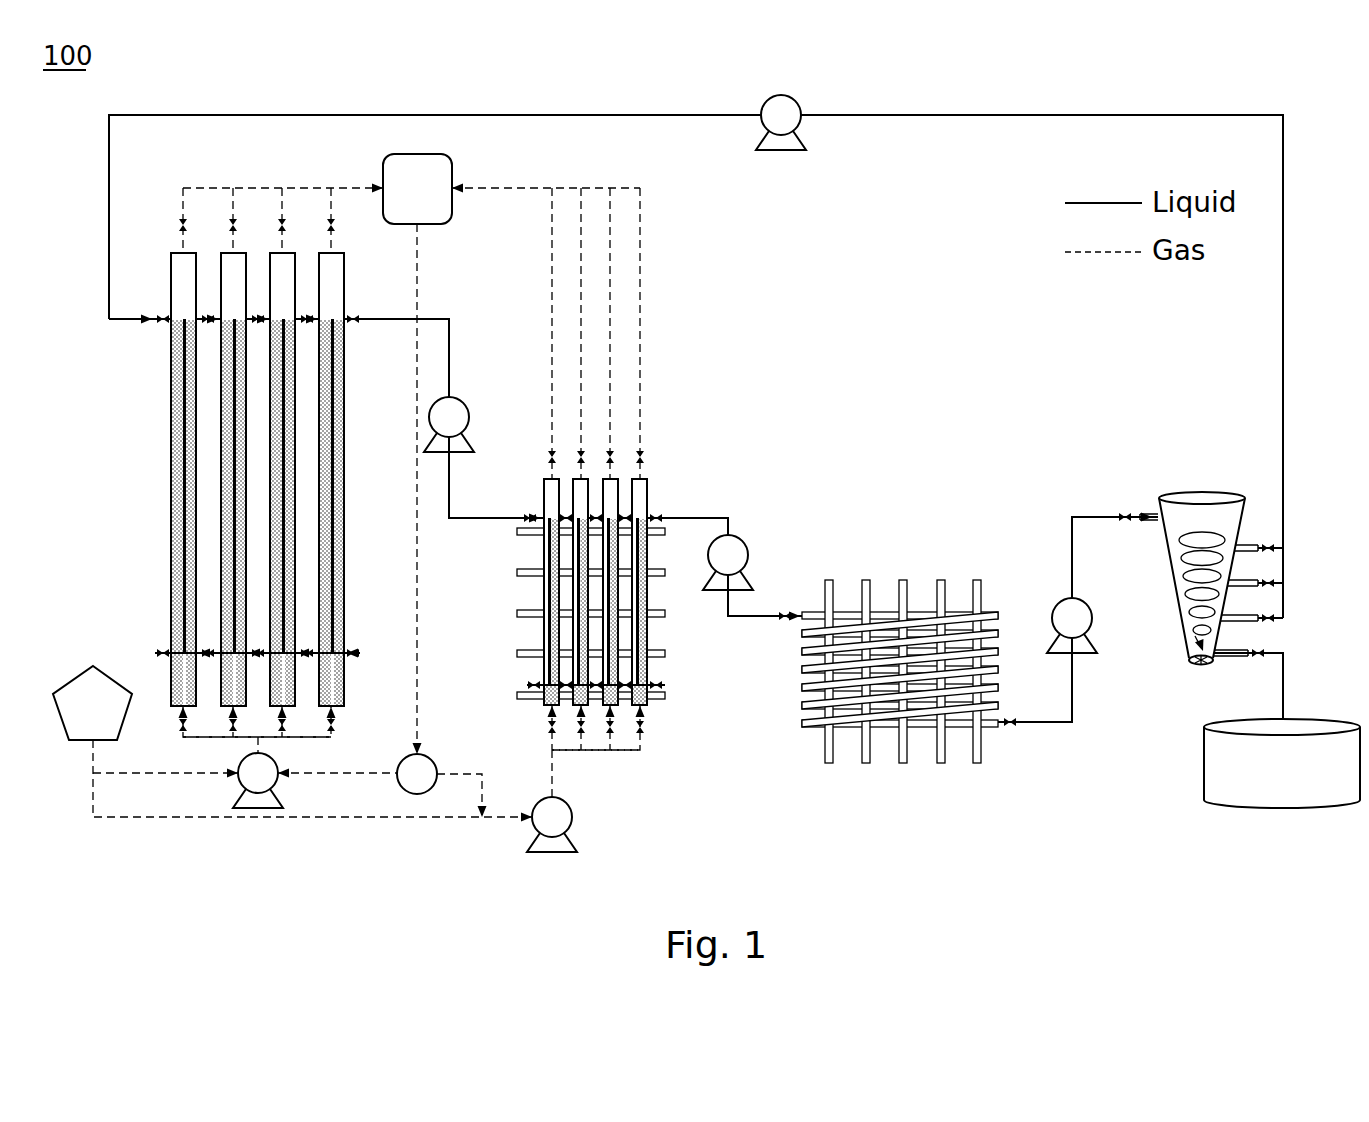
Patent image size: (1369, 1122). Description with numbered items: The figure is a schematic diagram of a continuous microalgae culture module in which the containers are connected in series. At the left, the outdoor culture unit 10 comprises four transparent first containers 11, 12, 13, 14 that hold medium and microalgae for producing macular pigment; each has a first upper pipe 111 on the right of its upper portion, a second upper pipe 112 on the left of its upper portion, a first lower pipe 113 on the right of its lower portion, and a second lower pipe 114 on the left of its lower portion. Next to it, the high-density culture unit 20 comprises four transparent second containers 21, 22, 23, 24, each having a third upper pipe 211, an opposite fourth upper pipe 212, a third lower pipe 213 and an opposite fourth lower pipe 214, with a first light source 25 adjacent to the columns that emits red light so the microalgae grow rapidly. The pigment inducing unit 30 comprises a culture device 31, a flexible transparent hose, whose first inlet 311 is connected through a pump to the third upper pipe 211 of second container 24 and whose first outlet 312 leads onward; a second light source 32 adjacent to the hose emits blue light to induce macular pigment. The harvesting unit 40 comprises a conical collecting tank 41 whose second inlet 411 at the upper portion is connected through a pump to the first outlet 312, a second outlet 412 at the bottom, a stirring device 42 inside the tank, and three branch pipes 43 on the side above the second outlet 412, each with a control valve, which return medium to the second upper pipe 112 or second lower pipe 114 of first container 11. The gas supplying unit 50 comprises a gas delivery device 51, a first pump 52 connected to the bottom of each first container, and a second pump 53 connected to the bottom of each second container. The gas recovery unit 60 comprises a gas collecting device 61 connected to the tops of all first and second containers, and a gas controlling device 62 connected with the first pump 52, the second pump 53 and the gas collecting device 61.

The outdoor culture unit 10 is at (208, 484).
The first container 11 is at (168, 272).
The first container 12 is at (248, 273).
The first container 13 is at (297, 273).
The first container 14 is at (346, 273).
The first upper pipe 111 is at (200, 318).
The second upper pipe 112 is at (167, 327).
The first lower pipe 113 is at (200, 655).
The second lower pipe 114 is at (168, 650).
The high-density culture unit 20 is at (598, 576).
The second container 21 is at (541, 490).
The second container 22 is at (587, 476).
The second container 23 is at (617, 476).
The second container 24 is at (647, 476).
The first light source 25 is at (517, 612).
The third upper pipe 211 is at (563, 517).
The fourth upper pipe 212 is at (543, 518).
The third lower pipe 213 is at (560, 695).
The fourth lower pipe 214 is at (543, 695).
The pigment inducing unit 30 is at (898, 617).
The culture device 31 is at (861, 639).
The first inlet 311 is at (802, 614).
The first outlet 312 is at (998, 724).
The second light source 32 is at (942, 580).
The harvesting unit 40 is at (1194, 561).
The collecting tank 41 is at (1139, 509).
The second inlet 411 is at (1138, 524).
The second outlet 412 is at (1225, 653).
The stirring device 42 is at (1185, 658).
The branch pipe 43 is at (1248, 542).
The gas supplying unit 50 is at (345, 758).
The gas delivery device 51 is at (73, 680).
The first pump 52 is at (238, 790).
The second pump 53 is at (573, 817).
The gas recovery unit 60 is at (434, 455).
The gas collecting device 61 is at (452, 156).
The gas controlling device 62 is at (430, 757).